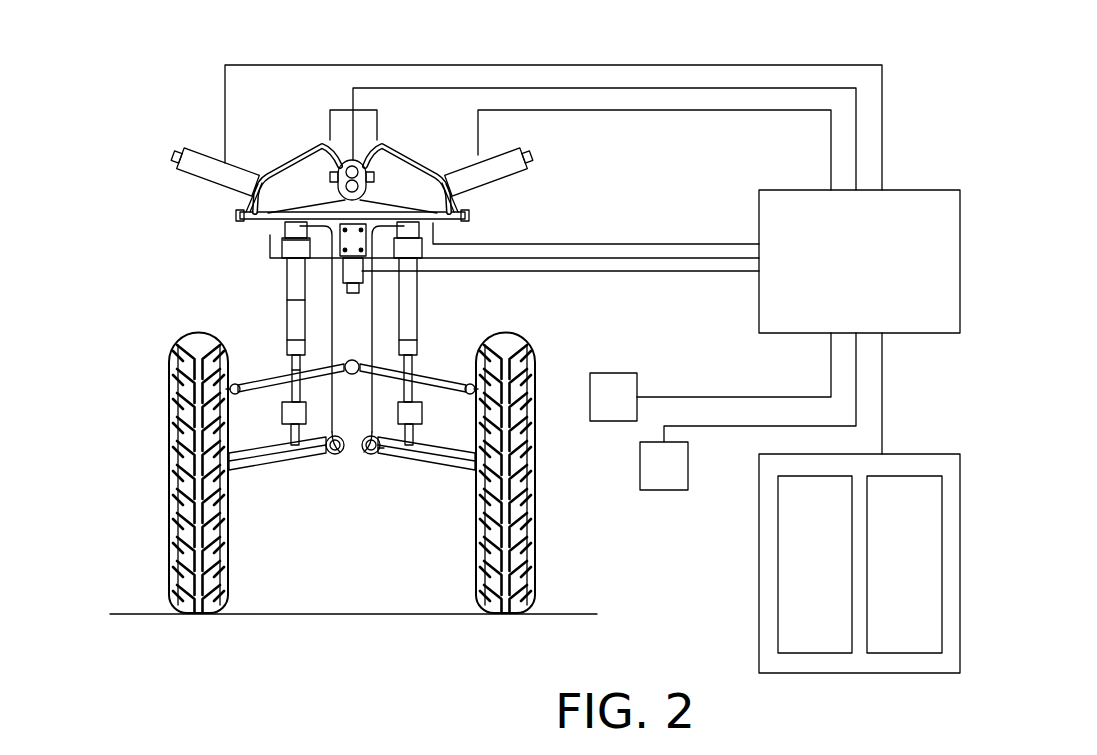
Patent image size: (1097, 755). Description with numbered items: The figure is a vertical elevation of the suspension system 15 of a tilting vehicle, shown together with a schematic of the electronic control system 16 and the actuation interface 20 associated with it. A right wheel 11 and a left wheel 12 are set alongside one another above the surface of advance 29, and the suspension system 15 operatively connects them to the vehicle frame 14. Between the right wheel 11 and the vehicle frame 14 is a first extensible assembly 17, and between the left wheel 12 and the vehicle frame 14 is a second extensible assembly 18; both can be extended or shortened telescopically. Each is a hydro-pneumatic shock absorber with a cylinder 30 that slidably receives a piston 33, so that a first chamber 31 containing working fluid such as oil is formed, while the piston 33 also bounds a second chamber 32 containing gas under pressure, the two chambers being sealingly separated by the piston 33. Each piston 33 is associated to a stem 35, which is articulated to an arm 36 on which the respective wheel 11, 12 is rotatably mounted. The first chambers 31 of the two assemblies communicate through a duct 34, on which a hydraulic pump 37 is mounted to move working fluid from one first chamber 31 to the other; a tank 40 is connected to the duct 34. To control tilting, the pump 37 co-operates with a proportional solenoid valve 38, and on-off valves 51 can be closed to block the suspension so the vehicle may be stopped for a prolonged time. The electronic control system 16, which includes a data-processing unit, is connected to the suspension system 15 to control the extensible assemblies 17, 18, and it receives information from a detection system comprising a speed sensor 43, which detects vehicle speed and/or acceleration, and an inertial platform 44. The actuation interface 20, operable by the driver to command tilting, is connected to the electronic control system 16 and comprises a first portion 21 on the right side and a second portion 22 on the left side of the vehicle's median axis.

The right wheel 11 is at (185, 540).
The left wheel 12 is at (525, 582).
The vehicle frame 14 is at (350, 445).
The suspension system 15 is at (386, 478).
The electronic control system 16 is at (878, 230).
The first extensible assembly 17 is at (270, 350).
The second extensible assembly 18 is at (420, 346).
The actuation interface 20 is at (902, 460).
The first portion 21 is at (808, 630).
The second portion 22 is at (903, 630).
The surface of advance 29 is at (565, 614).
The cylinder 30 is at (285, 290).
The first chamber 31 is at (270, 266).
The second chamber 32 is at (290, 298).
The piston 33 is at (300, 310).
The duct 34 is at (412, 150).
The stem 35 is at (300, 388).
The arm 36 is at (262, 475).
The pump 37 is at (318, 178).
The proportional solenoid valve 38 is at (365, 285).
The tank 40 is at (210, 158).
The speed sensor 43 is at (612, 395).
The inertial platform 44 is at (664, 478).
The on-off valves 51 is at (245, 230).